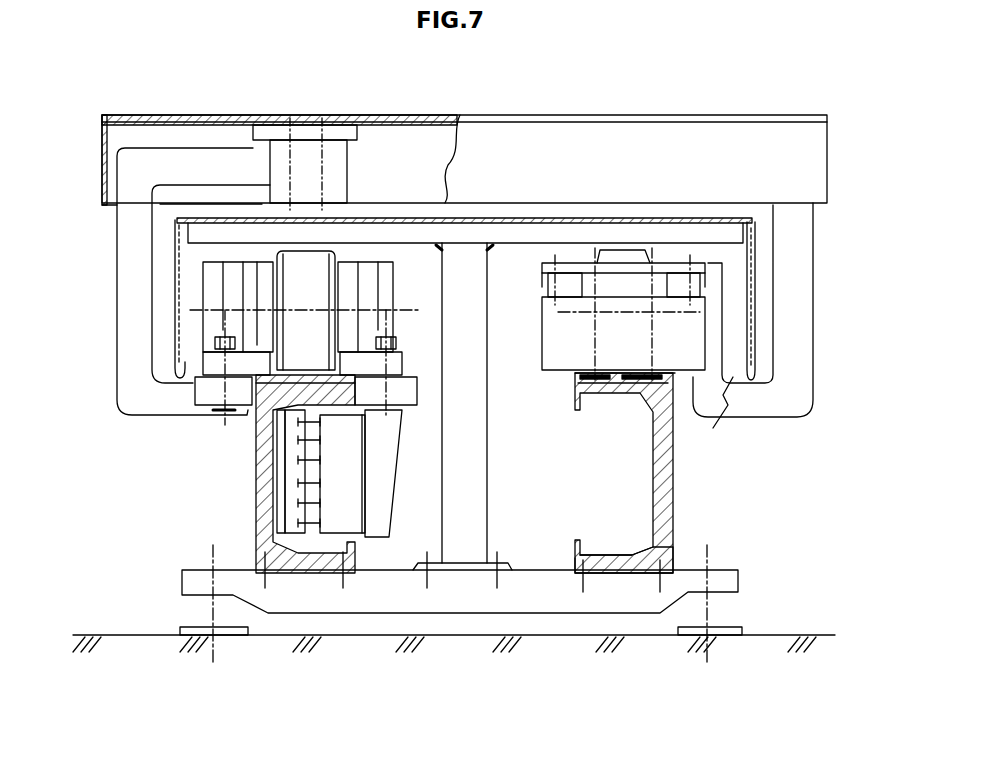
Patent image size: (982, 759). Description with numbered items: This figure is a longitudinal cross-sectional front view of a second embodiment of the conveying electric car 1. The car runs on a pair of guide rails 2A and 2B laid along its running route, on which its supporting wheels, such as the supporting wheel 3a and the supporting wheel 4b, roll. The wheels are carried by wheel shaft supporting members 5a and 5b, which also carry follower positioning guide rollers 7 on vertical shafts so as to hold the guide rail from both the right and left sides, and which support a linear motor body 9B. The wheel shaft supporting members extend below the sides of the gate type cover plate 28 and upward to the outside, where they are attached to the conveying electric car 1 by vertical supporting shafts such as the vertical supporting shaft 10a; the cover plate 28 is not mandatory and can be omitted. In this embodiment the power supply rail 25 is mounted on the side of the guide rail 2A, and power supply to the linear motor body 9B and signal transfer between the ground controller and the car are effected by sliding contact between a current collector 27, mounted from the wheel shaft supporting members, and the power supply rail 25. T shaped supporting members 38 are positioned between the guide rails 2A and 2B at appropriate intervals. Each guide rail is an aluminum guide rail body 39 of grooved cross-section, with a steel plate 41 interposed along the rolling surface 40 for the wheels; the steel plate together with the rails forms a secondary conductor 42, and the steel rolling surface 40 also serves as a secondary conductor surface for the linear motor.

The conveying electric car 1 is at (535, 138).
The vertical supporting shaft 10a is at (305, 130).
The supporting wheel 3a is at (310, 262).
The linear motor body 9B is at (611, 322).
The supporting wheel 4b is at (646, 258).
The cover plate 28 is at (756, 262).
The wheel shaft supporting member 5a is at (130, 300).
The wheel shaft supporting member 5b is at (782, 400).
The secondary conductor 42 is at (607, 373).
The rolling surface 40 is at (635, 372).
The steel plate 41 is at (597, 392).
The follower positioning guide roller 7 is at (205, 390).
The guide rail 2A is at (258, 410).
The guide rail 2B is at (675, 466).
The power supply rail 25 is at (295, 495).
The current collector 27 is at (333, 493).
The T shaped supporting member 38 is at (458, 533).
The aluminum guide rail body 39 is at (665, 522).